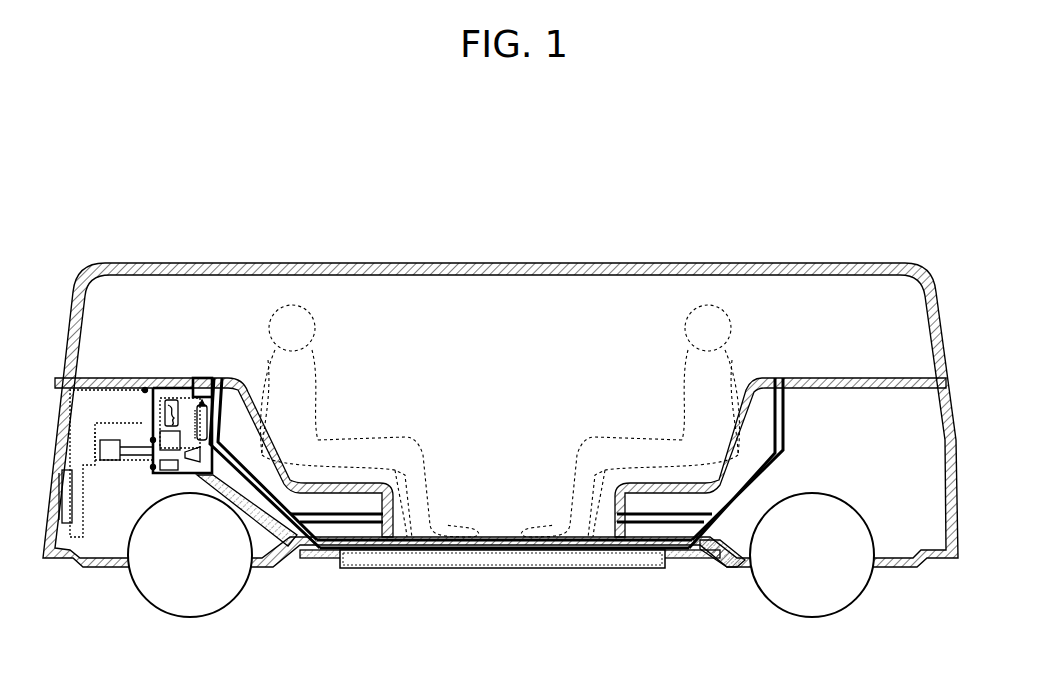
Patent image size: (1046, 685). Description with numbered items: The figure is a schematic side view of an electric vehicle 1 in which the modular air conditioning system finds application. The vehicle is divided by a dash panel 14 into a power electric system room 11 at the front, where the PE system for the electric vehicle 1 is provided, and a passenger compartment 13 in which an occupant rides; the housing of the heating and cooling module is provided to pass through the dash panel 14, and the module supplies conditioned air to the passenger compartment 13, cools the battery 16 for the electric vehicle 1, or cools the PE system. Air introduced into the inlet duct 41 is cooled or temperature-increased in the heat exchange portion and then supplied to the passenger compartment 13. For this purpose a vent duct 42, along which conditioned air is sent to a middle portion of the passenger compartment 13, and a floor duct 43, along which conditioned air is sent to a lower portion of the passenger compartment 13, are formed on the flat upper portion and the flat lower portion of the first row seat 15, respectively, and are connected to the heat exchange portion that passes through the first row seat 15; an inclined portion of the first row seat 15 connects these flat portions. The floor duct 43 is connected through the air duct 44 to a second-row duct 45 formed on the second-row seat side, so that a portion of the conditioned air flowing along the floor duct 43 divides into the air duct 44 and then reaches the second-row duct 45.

The electric vehicle 1 is at (867, 147).
The power electric (PE) system room 11 is at (122, 405).
The passenger compartment 13 is at (536, 328).
The dash panel 14 is at (237, 495).
The first row seat 15 is at (274, 435).
The battery 16 is at (598, 558).
The inlet duct 41 is at (205, 380).
The vent duct 42 is at (221, 378).
The floor duct 43 is at (327, 523).
The air duct 44 is at (492, 548).
The second-row duct 45 is at (730, 508).